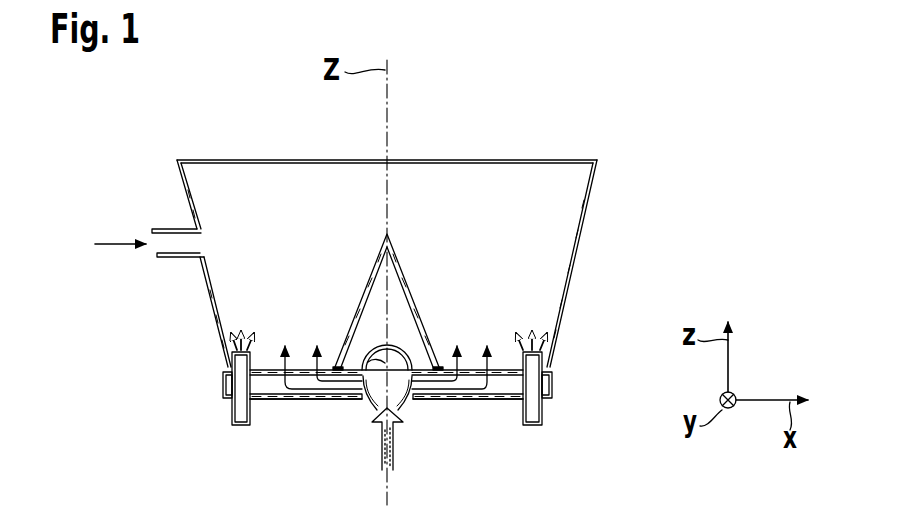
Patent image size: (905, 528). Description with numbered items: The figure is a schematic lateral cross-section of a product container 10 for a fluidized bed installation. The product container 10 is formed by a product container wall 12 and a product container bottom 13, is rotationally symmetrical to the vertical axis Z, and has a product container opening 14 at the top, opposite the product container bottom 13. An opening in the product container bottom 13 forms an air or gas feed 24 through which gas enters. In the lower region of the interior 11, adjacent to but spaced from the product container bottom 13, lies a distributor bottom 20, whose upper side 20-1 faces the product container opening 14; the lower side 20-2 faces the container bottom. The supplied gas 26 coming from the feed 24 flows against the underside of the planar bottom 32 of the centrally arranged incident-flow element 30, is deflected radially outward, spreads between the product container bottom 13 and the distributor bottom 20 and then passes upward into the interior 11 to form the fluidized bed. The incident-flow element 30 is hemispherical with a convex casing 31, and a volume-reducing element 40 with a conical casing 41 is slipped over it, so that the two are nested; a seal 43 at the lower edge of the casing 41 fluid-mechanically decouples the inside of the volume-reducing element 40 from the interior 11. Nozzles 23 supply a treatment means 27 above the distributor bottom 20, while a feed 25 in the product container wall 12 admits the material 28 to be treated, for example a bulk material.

The product container 10 is at (636, 110).
The interior 11 is at (513, 185).
The product container wall 12 is at (568, 280).
The product container bottom 13 is at (468, 408).
The product container opening 14 is at (233, 158).
The distributor bottom 20 is at (510, 400).
The side of the distributor bottom oriented toward the product container opening 20-1 is at (275, 366).
The lower plate of distributor 20-2 is at (260, 400).
The nozzle 23 is at (235, 412).
The air or gas feed 24 is at (398, 437).
The feed 25 is at (170, 227).
The supplied gas 26 is at (317, 400).
The treatment means 27 is at (218, 338).
The material to be treated 28 is at (115, 242).
The incident-flow element 30 is at (381, 326).
The convex casing 31 is at (404, 346).
The planar bottom 32 is at (368, 408).
The volume-reducing element 40 is at (400, 239).
The casing 41 is at (410, 274).
The seal 43 is at (338, 366).